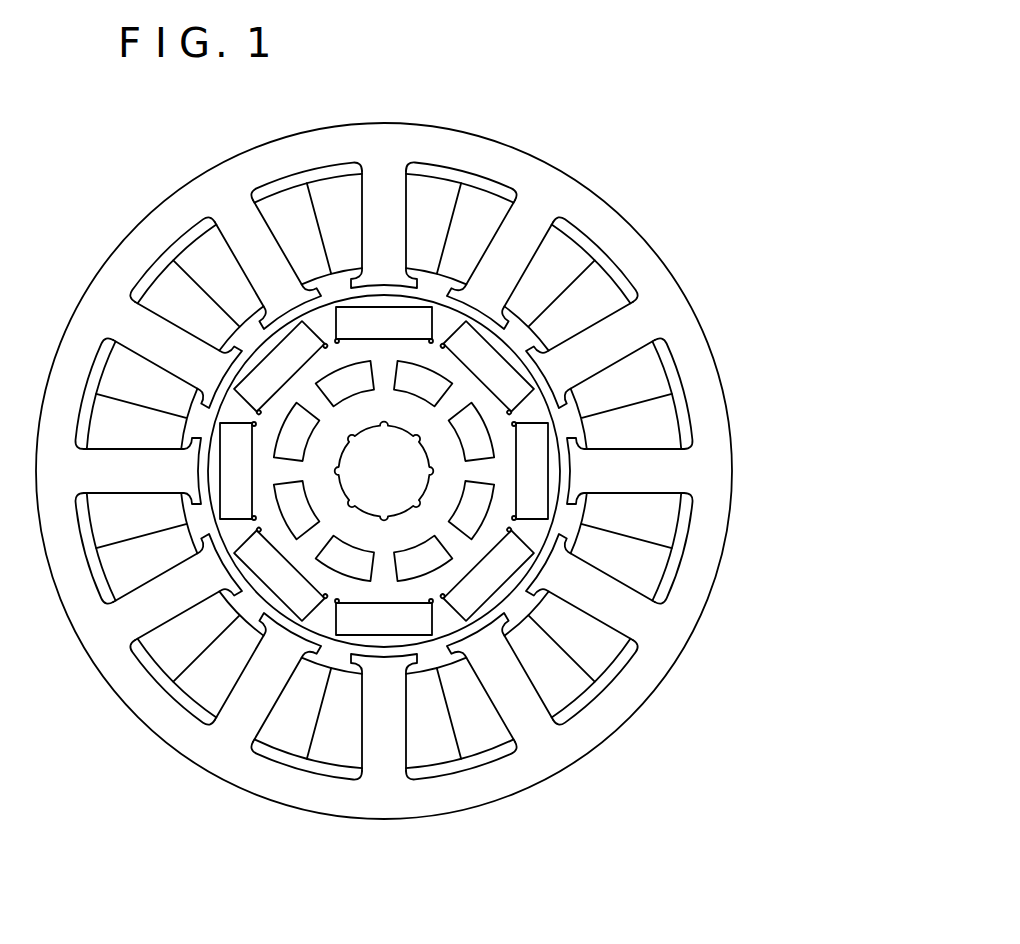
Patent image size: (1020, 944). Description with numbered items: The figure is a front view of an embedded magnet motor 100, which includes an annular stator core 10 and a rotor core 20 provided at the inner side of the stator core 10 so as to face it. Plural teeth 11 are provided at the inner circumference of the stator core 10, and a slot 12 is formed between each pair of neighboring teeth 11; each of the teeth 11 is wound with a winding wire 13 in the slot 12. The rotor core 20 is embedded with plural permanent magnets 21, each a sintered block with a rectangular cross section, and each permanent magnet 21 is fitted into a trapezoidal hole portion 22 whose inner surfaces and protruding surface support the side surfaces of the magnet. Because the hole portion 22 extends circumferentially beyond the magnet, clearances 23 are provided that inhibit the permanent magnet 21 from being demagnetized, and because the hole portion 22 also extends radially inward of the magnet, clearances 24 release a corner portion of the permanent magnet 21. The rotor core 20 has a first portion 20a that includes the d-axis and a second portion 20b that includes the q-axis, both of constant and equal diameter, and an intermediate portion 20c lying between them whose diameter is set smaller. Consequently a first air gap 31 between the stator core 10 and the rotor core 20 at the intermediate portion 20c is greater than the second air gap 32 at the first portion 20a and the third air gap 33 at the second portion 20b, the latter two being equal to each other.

The embedded magnet motor 100 is at (680, 185).
The stator core 10 is at (639, 276).
The teeth 11 is at (582, 357).
The slot 12 is at (610, 408).
The winding wire 13 is at (670, 370).
The rotor core 20 is at (498, 472).
The first portion 20a is at (378, 645).
The second portion 20b is at (448, 595).
The intermediate portion 20c is at (438, 638).
The permanent magnet 21 is at (530, 537).
The hole portion 22 is at (362, 612).
The clearance 23 is at (333, 643).
The clearance 24 is at (347, 600).
The first air gap 31 is at (507, 635).
The second air gap 32 is at (407, 650).
The third air gap 33 is at (403, 623).